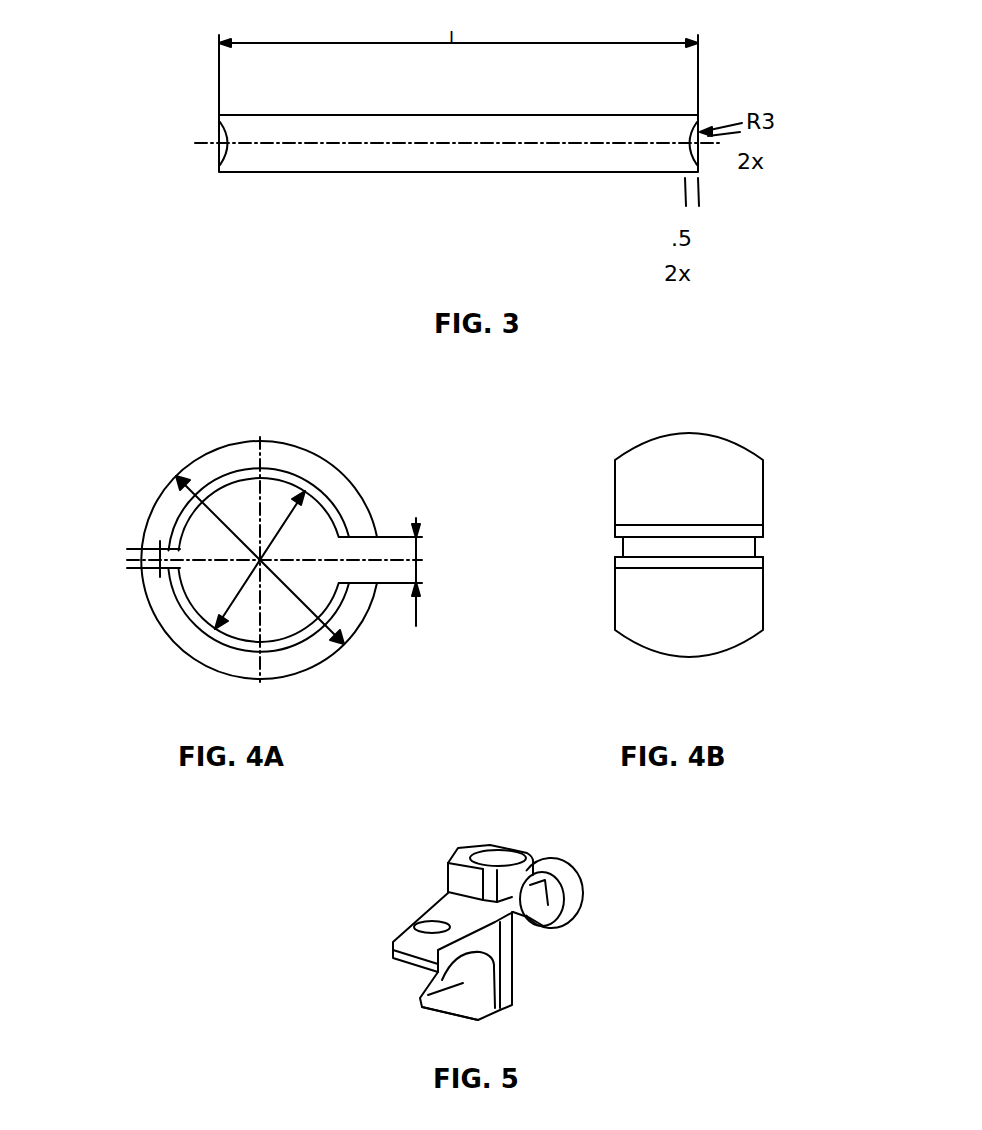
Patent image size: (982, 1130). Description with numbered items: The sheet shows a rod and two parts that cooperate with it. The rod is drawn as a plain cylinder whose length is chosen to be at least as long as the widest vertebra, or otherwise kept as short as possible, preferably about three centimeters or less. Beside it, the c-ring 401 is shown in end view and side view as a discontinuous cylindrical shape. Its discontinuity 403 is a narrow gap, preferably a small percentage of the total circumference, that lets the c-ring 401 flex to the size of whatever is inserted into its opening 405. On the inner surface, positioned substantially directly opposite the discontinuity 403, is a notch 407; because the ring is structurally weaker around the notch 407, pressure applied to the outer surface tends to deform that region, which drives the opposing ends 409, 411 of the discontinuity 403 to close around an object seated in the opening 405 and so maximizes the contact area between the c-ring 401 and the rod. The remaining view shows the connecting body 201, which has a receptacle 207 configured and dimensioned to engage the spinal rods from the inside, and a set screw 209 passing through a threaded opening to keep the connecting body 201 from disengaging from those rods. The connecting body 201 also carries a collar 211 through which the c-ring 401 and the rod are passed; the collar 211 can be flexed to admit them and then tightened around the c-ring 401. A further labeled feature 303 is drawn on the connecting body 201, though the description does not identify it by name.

In FIG. 4A, the c-ring 401 is at (274, 529).
In FIG. 4B, the c-ring 401 is at (744, 428).
In FIG. 4A, the discontinuity 403 is at (372, 545).
In FIG. 4A, the opening 405 is at (220, 582).
In FIG. 4A, the notch 407 is at (143, 577).
In FIG. 4B, the opposing end of the discontinuity 409 is at (763, 528).
In FIG. 4B, the opposing end of the discontinuity 411 is at (752, 565).
In FIG. 5, the connecting body 201 is at (474, 924).
In FIG. 5, the receptacle 207 is at (417, 1003).
In FIG. 5, the set screw 209 is at (400, 933).
In FIG. 5, the collar 211 is at (560, 880).
In FIG. 5, the block / pin boss 303 is at (505, 855).